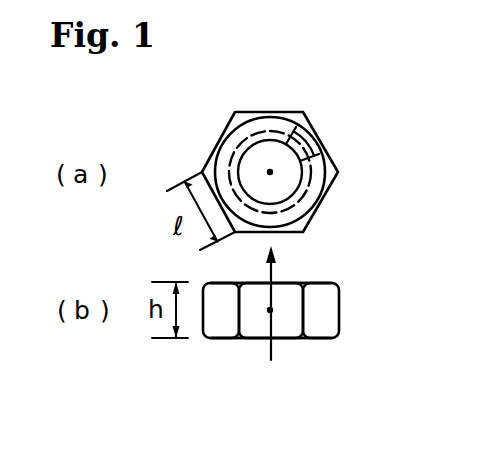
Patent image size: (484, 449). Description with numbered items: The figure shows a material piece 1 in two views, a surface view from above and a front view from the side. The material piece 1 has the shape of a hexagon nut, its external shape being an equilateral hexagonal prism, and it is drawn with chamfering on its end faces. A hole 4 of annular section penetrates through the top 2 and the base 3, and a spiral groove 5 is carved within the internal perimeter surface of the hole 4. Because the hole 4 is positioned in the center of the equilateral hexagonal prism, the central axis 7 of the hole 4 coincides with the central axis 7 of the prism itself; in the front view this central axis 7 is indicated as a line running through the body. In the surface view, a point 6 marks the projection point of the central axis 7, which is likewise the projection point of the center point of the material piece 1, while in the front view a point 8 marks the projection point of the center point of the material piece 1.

The material piece 1 is at (328, 190).
The top 2 is at (322, 283).
The base 3 is at (323, 338).
The hole 4 is at (300, 162).
The spiral groove 5 is at (296, 199).
The point 6 is at (270, 172).
The central axis 7 is at (272, 320).
The point 8 is at (268, 310).